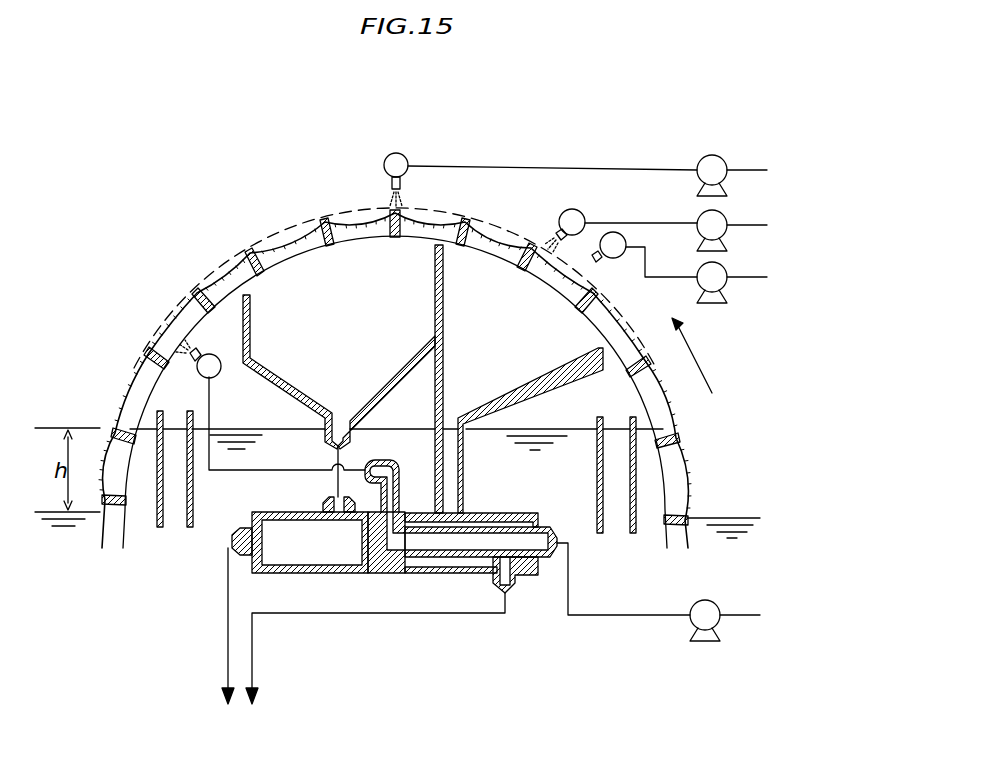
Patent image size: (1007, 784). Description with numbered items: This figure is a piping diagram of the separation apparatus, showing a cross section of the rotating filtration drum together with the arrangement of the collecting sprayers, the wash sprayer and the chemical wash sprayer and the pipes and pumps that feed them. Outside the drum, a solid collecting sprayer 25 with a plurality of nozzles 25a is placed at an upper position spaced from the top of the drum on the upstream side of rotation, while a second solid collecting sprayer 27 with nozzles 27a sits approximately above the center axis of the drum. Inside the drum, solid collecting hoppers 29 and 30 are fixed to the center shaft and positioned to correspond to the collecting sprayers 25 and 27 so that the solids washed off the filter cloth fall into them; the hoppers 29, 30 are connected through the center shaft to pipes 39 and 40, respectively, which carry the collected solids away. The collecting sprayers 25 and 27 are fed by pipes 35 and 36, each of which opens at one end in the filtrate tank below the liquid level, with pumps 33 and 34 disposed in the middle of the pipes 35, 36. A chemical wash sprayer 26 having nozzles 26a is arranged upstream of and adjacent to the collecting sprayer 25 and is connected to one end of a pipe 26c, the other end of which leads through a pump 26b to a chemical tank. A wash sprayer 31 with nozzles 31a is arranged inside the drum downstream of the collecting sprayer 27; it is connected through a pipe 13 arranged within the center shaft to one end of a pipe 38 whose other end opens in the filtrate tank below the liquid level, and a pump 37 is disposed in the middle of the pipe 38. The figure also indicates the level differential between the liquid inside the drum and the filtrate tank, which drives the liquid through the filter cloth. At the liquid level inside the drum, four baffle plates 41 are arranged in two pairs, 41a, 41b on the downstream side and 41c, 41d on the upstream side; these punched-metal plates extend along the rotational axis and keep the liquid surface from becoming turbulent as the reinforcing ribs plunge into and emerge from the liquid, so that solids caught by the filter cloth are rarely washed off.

The pipe 13 is at (477, 518).
The solid collecting sprayer 25 is at (585, 222).
The nozzles 25a is at (553, 233).
The chemical wash sprayer 26 is at (626, 245).
The nozzles 26a is at (594, 263).
The pump 26b is at (695, 302).
The pipe 26c is at (740, 281).
The solid collecting sprayer 27 is at (400, 162).
The nozzles 27a is at (387, 183).
The solid collecting hopper 29 is at (513, 407).
The solid collecting hopper 30 is at (277, 388).
The wash sprayer 31 is at (233, 325).
The nozzles 31a is at (197, 361).
The pump 33 is at (717, 228).
The pump 34 is at (717, 162).
The pipe 35 is at (633, 224).
The pipe 36 is at (573, 167).
The pump 37 is at (705, 605).
The pipe 38 is at (583, 618).
The pipe 39 is at (347, 613).
The pipe 40 is at (227, 603).
The baffle plates 41 is at (218, 572).
The baffle plate 41a is at (158, 530).
The baffle plate 41b is at (190, 530).
The baffle plate 41c is at (598, 533).
The baffle plate 41d is at (635, 533).